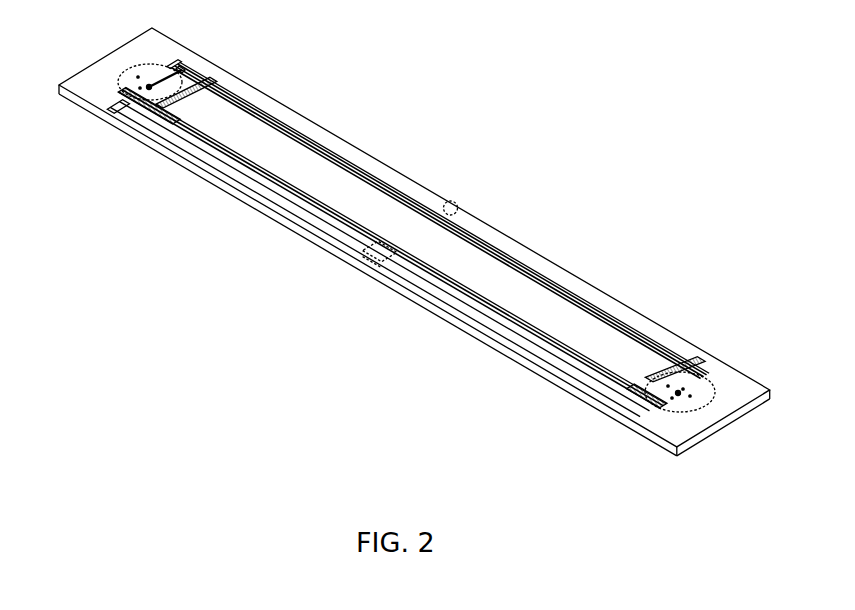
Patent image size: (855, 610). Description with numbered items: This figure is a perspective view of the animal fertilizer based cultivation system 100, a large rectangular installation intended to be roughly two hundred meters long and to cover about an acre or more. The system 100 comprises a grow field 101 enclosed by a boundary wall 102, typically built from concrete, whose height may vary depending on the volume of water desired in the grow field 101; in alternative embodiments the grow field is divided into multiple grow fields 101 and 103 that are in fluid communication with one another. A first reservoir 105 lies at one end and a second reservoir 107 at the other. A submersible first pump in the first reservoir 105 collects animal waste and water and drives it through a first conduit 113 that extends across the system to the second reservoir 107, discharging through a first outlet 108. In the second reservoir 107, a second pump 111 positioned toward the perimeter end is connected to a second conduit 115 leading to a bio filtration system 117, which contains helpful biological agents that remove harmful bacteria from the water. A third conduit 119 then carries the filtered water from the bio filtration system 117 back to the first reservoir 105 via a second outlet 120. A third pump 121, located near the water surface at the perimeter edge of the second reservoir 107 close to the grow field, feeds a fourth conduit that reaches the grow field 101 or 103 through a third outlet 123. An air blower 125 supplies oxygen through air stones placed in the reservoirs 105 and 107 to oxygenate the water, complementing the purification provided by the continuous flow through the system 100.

The cultivation system 100 is at (494, 106).
The grow field 101 is at (438, 219).
The boundary wall 102 is at (343, 114).
The grow field 103 is at (392, 247).
The first reservoir 105 is at (186, 59).
The second reservoir 107 is at (414, 251).
The first outlet 108 is at (452, 230).
The second pump 111 is at (595, 437).
The first conduit 113 is at (298, 88).
The second conduit 115 is at (531, 399).
The bio filtration system 117 is at (347, 300).
The third conduit 119 is at (378, 258).
The second outlet 120 is at (116, 75).
The third pump 121 is at (698, 362).
The third outlet 123 is at (438, 229).
The air blower 125 is at (510, 183).